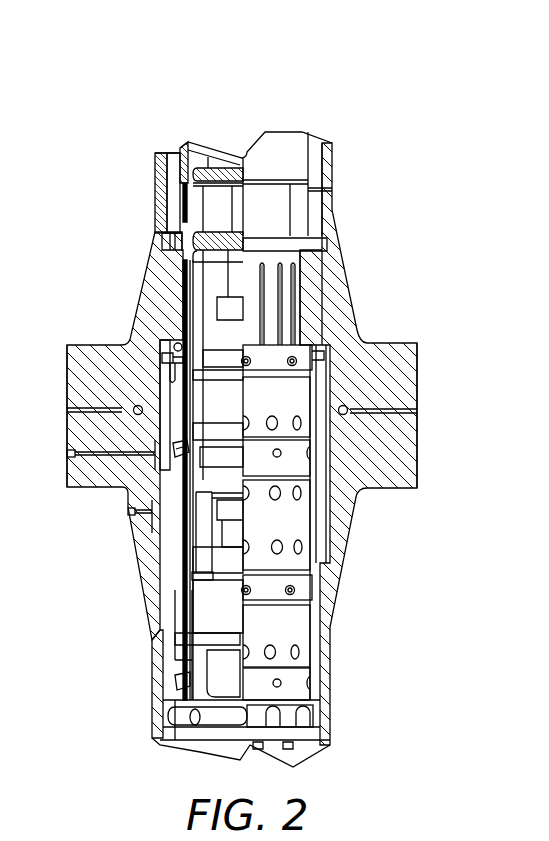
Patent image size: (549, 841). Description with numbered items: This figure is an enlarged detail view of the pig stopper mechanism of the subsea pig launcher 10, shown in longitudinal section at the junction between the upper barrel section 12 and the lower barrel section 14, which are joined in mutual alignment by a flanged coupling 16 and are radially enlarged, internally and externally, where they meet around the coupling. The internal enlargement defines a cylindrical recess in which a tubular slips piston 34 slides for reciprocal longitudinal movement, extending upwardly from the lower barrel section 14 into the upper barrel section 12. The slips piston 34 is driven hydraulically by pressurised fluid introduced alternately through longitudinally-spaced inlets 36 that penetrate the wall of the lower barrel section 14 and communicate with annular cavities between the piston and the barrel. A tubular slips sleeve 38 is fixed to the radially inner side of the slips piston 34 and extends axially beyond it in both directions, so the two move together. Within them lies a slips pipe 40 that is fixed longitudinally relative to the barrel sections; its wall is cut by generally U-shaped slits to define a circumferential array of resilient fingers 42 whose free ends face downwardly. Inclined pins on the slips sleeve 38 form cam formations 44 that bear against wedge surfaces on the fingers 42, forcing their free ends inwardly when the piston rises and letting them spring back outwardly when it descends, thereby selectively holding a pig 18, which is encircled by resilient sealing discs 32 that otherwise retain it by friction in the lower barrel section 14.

The subsea pig launcher 10 is at (336, 93).
The upper barrel section 12 is at (333, 163).
The lower barrel section 14 is at (331, 703).
The flanged coupling 16 is at (419, 478).
The pig 18 is at (223, 208).
The resilient sealing discs 32 is at (225, 735).
The slips piston 34 is at (175, 553).
The inlets 36 is at (67, 453).
The slips sleeve 38 is at (176, 344).
The slips pipe 40 is at (300, 320).
The fingers 42 is at (287, 285).
The cam formations 44 is at (182, 443).